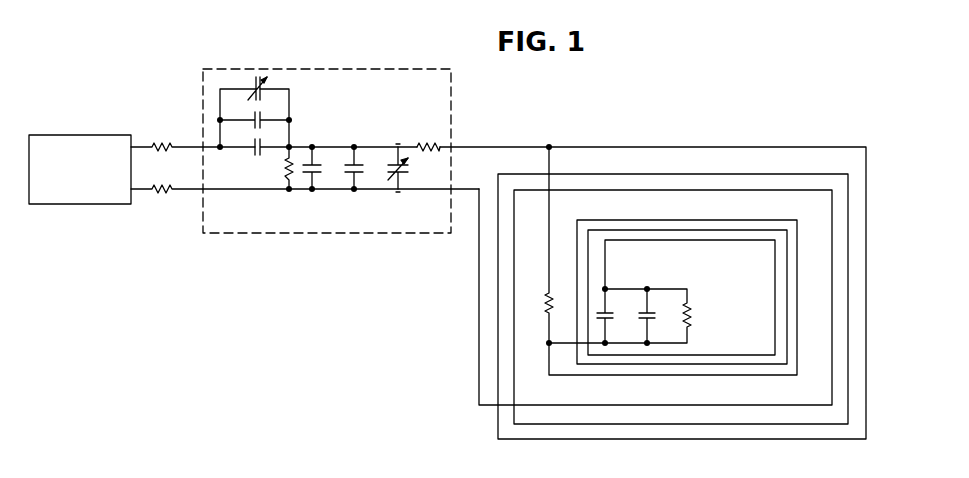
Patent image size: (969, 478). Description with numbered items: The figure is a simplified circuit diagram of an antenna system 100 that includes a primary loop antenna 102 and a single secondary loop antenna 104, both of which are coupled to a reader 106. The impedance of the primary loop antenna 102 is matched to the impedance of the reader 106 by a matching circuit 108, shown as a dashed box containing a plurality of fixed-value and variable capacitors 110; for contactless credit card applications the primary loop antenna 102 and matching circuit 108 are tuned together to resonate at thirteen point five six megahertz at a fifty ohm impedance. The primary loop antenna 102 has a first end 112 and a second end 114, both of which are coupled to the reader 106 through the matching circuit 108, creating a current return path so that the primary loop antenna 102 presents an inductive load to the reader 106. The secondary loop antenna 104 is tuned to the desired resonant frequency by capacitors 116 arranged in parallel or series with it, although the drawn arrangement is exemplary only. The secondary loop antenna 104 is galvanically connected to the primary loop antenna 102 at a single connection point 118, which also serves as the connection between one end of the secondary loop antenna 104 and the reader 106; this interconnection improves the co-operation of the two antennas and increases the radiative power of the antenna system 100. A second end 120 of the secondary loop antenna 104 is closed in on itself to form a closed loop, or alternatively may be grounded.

The antenna system 100 is at (863, 124).
The primary loop antenna 102 is at (693, 147).
The secondary loop antenna 104 is at (795, 353).
The reader 106 is at (60, 206).
The matching circuit 108 is at (273, 233).
The variable capacitors 110 is at (252, 88).
The first end 112 is at (140, 146).
The second end 114 is at (140, 191).
The capacitors 116 is at (610, 312).
The galvanic connection point 118 is at (549, 146).
The second end 120 is at (606, 287).